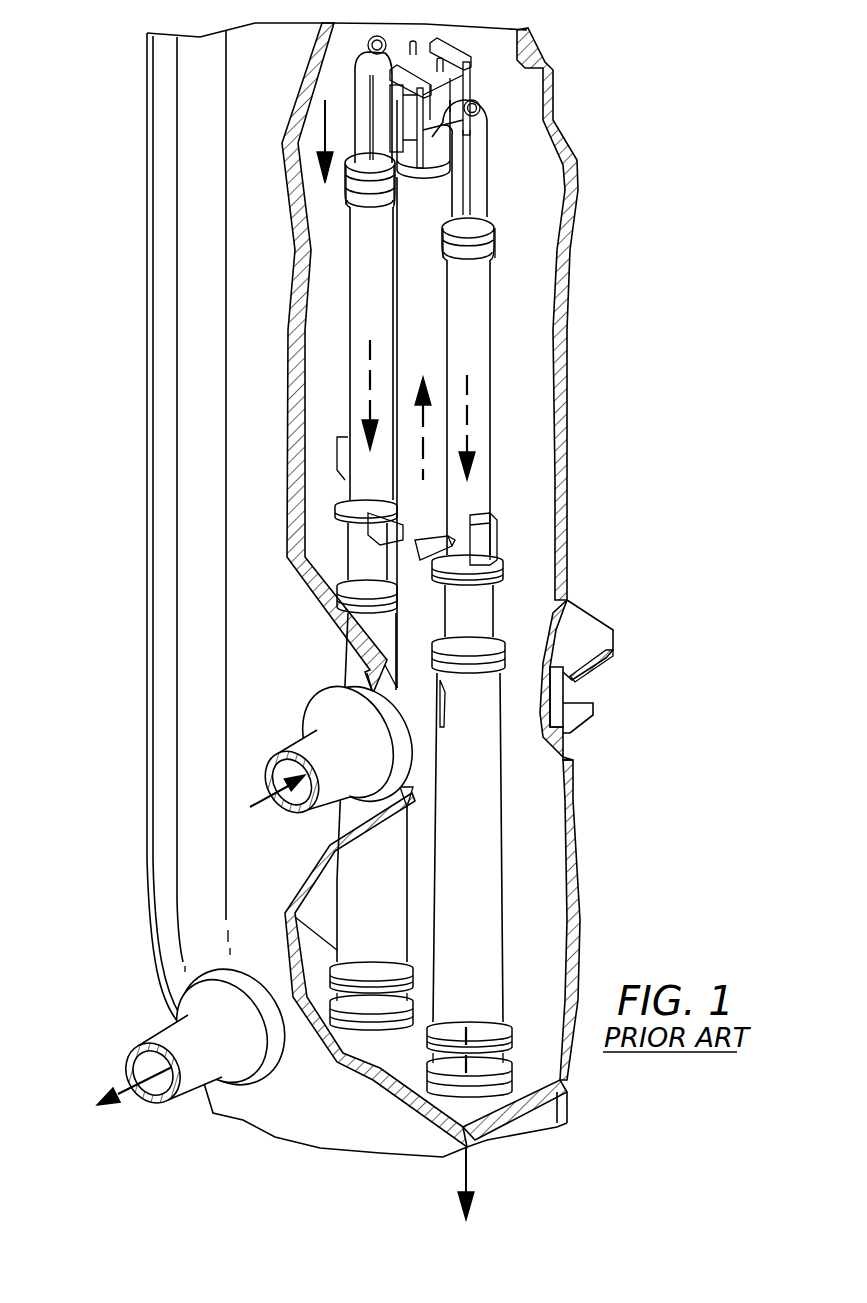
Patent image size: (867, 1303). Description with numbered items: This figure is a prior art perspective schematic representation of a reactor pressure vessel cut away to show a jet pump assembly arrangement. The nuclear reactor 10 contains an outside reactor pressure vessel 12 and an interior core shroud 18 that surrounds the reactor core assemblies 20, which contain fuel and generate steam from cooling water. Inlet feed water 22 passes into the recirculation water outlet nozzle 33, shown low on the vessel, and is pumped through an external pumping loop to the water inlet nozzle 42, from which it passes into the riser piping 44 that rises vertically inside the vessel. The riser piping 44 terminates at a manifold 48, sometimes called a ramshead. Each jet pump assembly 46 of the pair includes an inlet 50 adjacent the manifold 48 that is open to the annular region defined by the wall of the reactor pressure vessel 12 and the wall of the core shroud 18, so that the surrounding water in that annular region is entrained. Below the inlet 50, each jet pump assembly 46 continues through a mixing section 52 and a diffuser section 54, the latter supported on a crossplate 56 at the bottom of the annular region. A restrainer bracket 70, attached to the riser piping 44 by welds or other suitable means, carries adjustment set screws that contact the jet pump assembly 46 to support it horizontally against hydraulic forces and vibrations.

The nuclear reactor 10 is at (119, 311).
The reactor pressure vessel 12 is at (275, 1132).
The core shroud 18 is at (573, 837).
The reactor core assemblies 20 is at (679, 720).
The inlet feed water 22 is at (300, 136).
The recirculation water outlet nozzle 33 is at (239, 1076).
The water inlet nozzle 42 is at (318, 717).
The riser piping 44 is at (415, 320).
The jet pump assembly 46 is at (350, 258).
The manifold 48 is at (480, 157).
The inlet 50 is at (491, 218).
The mixing section 52 is at (495, 372).
The diffuser section 54 is at (492, 962).
The crossplate 56 is at (518, 1113).
The restrainer bracket 70 is at (518, 563).